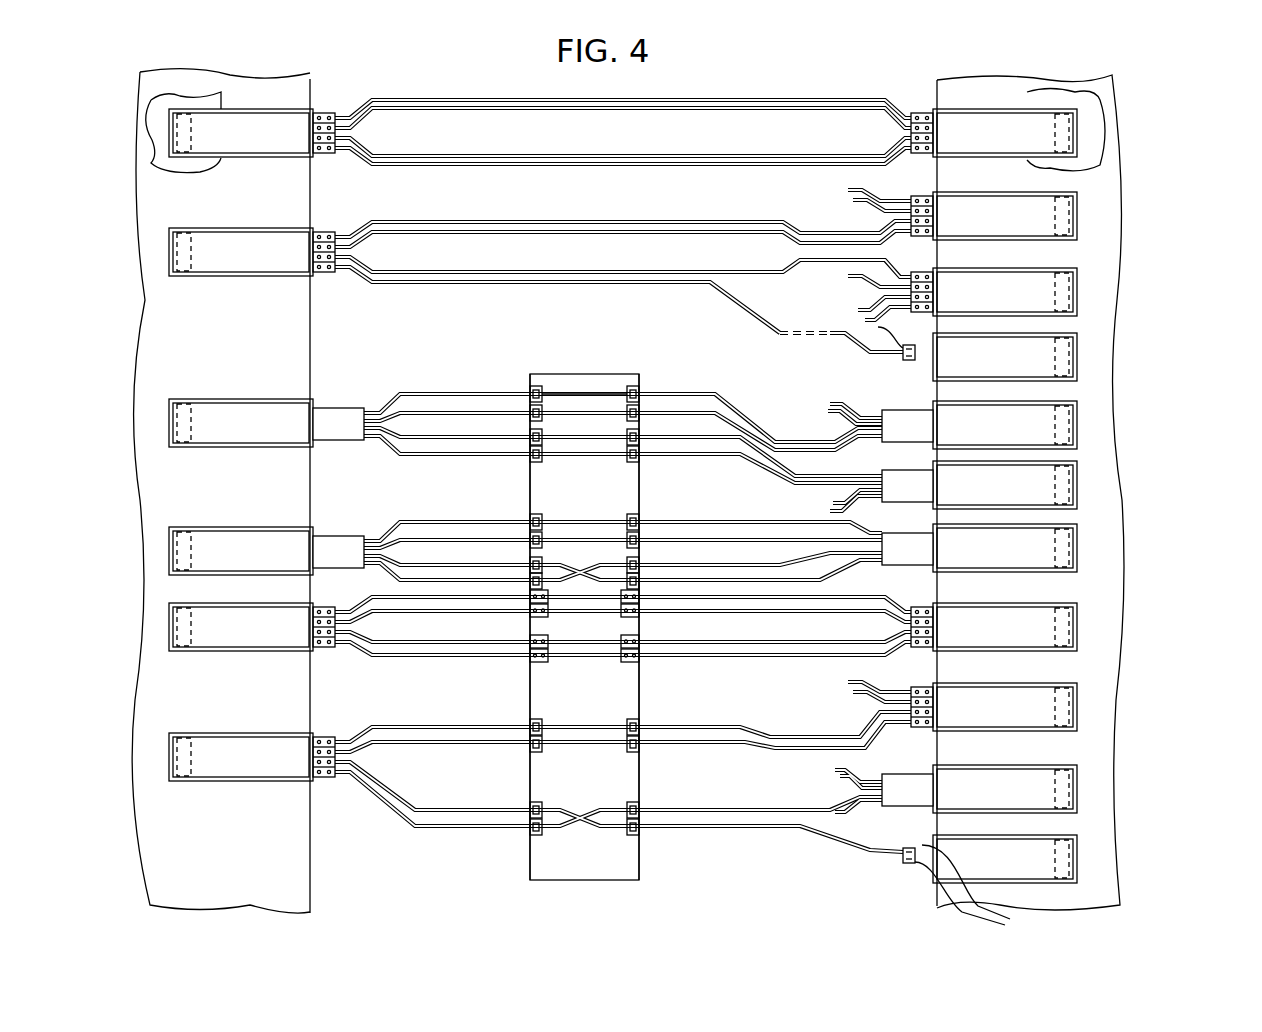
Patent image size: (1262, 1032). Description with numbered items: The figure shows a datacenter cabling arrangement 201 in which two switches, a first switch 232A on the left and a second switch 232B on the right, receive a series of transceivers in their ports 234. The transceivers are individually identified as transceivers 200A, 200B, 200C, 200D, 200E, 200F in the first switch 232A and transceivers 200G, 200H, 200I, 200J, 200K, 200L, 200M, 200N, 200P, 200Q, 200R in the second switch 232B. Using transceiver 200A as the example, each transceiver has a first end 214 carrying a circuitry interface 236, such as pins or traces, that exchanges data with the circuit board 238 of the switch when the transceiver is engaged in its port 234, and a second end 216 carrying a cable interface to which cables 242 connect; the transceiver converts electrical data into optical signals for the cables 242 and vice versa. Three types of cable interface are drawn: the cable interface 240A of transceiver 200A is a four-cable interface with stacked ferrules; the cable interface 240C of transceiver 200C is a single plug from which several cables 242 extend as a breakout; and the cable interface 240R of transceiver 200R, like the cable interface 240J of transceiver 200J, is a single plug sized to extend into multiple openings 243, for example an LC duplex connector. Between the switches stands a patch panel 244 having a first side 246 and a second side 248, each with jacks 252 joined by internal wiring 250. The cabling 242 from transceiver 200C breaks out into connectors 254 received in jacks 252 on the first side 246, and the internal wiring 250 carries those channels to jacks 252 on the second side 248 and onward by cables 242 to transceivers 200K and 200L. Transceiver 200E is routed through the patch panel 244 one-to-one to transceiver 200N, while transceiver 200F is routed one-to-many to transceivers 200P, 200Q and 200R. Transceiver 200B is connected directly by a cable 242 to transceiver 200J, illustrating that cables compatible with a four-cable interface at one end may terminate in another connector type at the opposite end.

The datacenter cabling arrangement 201 is at (1160, 108).
The first end 214 is at (203, 172).
The second end 216 is at (300, 158).
The first switch 232A is at (310, 92).
The second switch 232B is at (937, 92).
The port 234 is at (258, 108).
The circuitry interface 236 is at (178, 124).
The circuit board 238 is at (170, 152).
The cable interface 240A is at (345, 104).
The cable interface 240C is at (345, 404).
The cable interface 240J is at (874, 369).
The cable interface 240R is at (876, 872).
The cable 242 is at (537, 100).
The openings 243 is at (903, 345).
The patch panel 244 is at (557, 374).
The first side 246 is at (530, 486).
The second side 248 is at (639, 486).
The internal wiring 250 is at (588, 395).
The jack 252 is at (532, 390).
The connector 254 is at (530, 398).
The transceiver 200A is at (199, 156).
The transceiver 200B is at (218, 264).
The transceiver 200C is at (218, 435).
The transceiver 200D is at (218, 563).
The transceiver 200E is at (218, 639).
The transceiver 200F is at (218, 769).
The transceiver 200G is at (969, 145).
The transceiver 200H is at (969, 228).
The transceiver 200I is at (971, 304).
The transceiver 200J is at (970, 369).
The transceiver 200K is at (969, 437).
The transceiver 200L is at (970, 497).
The transceiver 200M is at (968, 560).
The transceiver 200N is at (969, 639).
The transceiver 200P is at (969, 719).
The transceiver 200Q is at (969, 801).
The transceiver 200R is at (969, 871).